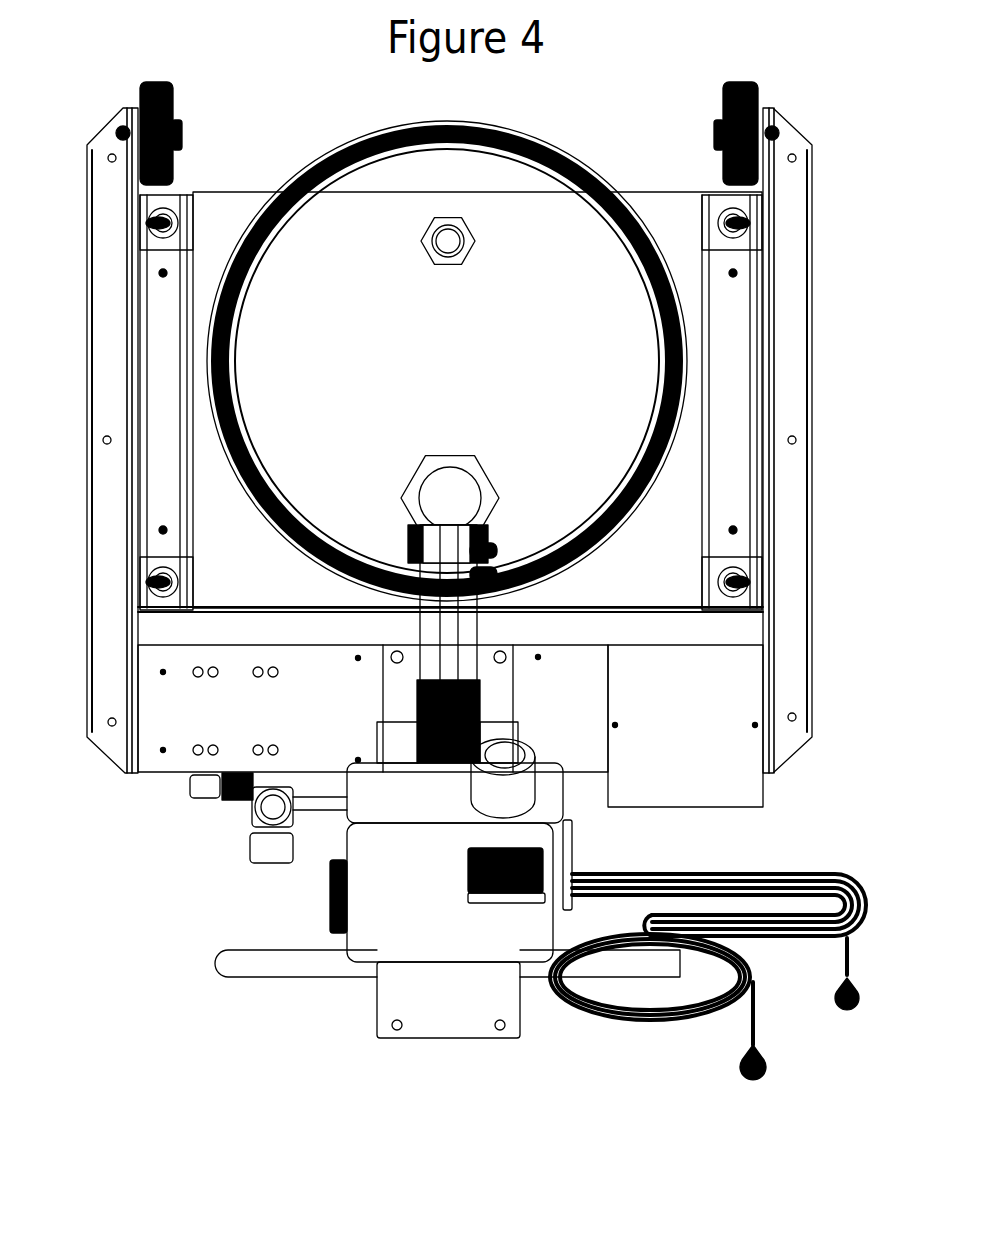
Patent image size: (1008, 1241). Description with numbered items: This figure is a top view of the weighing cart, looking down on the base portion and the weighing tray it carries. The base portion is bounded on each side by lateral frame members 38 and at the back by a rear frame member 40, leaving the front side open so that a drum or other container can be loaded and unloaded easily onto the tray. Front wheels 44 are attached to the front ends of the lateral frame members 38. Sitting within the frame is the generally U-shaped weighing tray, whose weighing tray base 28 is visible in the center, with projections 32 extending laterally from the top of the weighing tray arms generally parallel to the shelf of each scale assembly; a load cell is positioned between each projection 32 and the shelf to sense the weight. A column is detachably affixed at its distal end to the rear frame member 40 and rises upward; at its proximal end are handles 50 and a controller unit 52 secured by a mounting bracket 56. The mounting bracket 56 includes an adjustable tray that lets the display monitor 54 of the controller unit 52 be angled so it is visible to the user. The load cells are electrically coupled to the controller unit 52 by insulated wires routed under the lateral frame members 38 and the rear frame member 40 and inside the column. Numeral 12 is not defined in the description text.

The clamp and shaft assembly 12 is at (540, 598).
The weighing tray base 28 is at (675, 523).
The projections 32 is at (740, 413).
The lateral frame members 38 is at (100, 685).
The rear frame member 40 is at (170, 748).
The front wheels 44 is at (715, 133).
The handles 50 is at (253, 963).
The controller unit 52 is at (475, 960).
The display monitor 54 is at (483, 902).
The mounting bracket 56 is at (417, 1007).